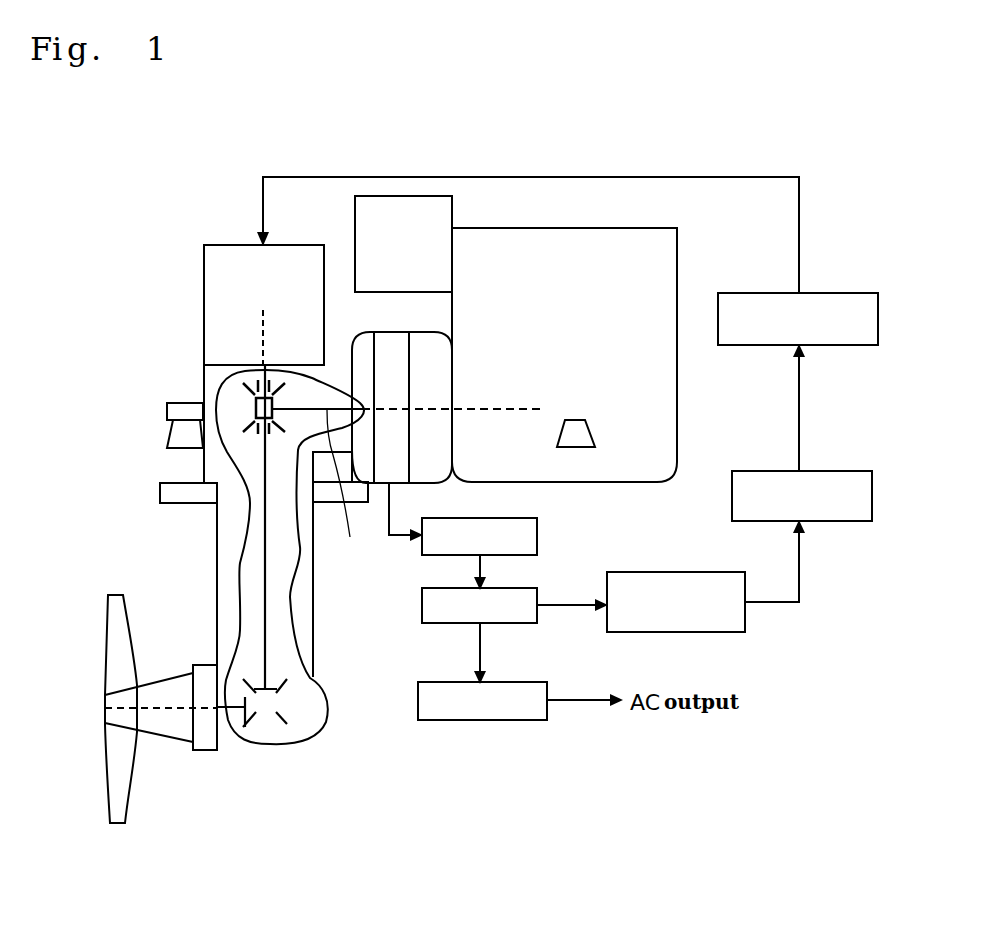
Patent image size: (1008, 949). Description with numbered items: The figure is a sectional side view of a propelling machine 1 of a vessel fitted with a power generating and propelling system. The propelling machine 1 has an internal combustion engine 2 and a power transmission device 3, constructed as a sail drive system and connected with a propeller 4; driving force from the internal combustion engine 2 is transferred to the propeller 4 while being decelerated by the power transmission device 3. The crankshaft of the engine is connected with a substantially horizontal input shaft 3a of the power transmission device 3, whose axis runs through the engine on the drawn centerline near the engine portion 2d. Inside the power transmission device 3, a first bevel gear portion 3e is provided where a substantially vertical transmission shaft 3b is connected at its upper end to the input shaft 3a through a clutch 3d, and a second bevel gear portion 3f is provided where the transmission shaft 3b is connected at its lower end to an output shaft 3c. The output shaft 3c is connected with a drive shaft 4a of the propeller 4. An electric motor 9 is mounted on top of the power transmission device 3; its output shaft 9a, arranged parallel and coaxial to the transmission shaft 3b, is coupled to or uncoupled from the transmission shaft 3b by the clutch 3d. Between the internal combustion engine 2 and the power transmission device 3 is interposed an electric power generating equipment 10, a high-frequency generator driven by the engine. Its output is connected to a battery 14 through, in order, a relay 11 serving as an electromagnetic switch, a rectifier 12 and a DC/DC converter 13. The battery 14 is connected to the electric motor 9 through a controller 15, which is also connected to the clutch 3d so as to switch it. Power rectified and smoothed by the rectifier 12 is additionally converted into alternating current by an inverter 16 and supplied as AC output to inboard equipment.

The propelling machine 1 is at (154, 200).
The internal combustion engine 2 is at (565, 343).
The engine output shaft 2d is at (508, 409).
The power transmission device 3 is at (208, 564).
The input shaft 3a is at (343, 487).
The transmission shaft 3b is at (267, 613).
The output shaft 3c is at (233, 713).
The clutch 3d is at (243, 409).
The first bevel gear portion 3e is at (290, 398).
The second bevel gear portion 3f is at (272, 706).
The propeller 4 is at (160, 790).
The drive shaft 4a is at (173, 708).
The electric motor 9 is at (232, 240).
The output shaft 9a is at (263, 337).
The electric power generating equipment 10 is at (392, 345).
The relay 11 is at (533, 533).
The rectifier 12 is at (513, 623).
The DC/DC converter 13 is at (746, 626).
The battery 14 is at (768, 471).
The controller 15 is at (750, 294).
The inverter 16 is at (475, 721).